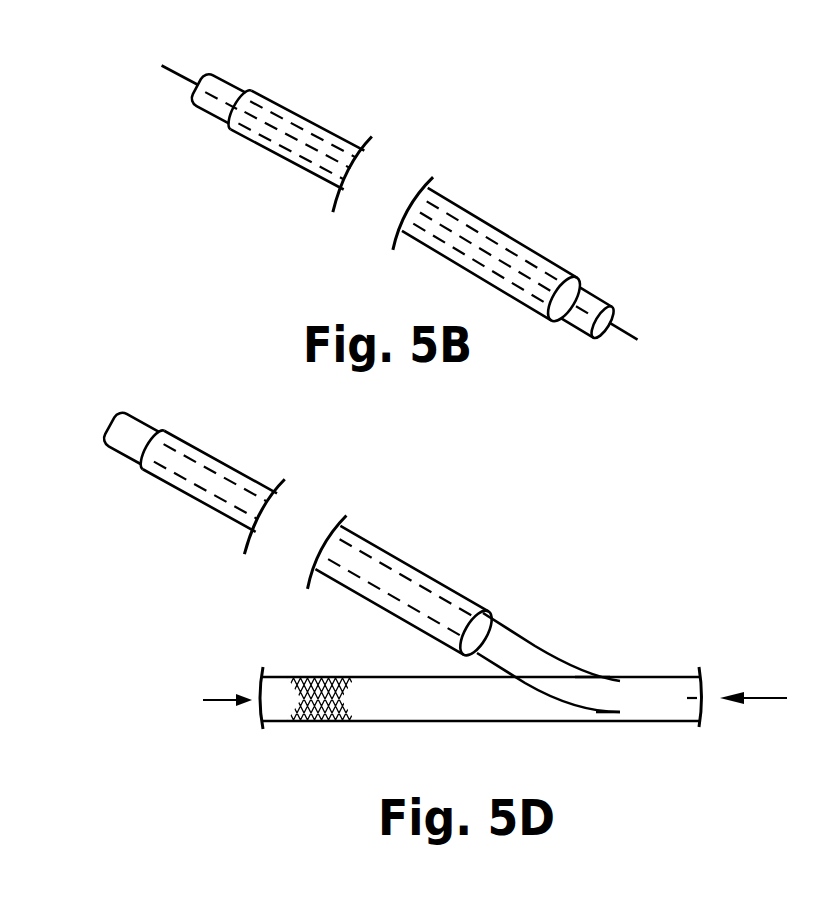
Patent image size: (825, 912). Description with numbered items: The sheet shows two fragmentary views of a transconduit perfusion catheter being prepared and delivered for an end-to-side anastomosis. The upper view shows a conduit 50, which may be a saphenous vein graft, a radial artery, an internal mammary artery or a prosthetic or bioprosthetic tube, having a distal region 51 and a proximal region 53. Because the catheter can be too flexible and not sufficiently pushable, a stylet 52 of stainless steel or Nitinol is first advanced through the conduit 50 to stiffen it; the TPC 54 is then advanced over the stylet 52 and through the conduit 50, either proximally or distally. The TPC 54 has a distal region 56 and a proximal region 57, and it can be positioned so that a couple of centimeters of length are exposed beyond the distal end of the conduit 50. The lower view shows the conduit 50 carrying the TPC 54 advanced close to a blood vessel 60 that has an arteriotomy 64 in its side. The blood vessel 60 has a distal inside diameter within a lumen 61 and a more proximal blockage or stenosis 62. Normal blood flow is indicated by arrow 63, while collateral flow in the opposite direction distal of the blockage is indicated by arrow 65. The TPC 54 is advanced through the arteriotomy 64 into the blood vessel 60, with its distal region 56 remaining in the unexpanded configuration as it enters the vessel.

In FIG. 5B, the conduit 50 is at (478, 212).
In FIG. 5D, the conduit 50 is at (388, 552).
In FIG. 5D, the distal region 51 is at (463, 595).
In FIG. 5B, the stylet 52 is at (182, 73).
In FIG. 5D, the proximal region 53 is at (173, 432).
In FIG. 5B, the transconduit perfusion catheter 54 is at (323, 133).
In FIG. 5D, the transconduit perfusion catheter 54 is at (513, 638).
In FIG. 5B, the distal region 56 is at (587, 337).
In FIG. 5D, the distal region 56 is at (606, 712).
In FIG. 5B, the proximal region 57 is at (237, 85).
In FIG. 5D, the blood vessel 60 is at (670, 673).
In FIG. 5D, the lumen 61 is at (705, 702).
In FIG. 5D, the stenosis 62 is at (317, 725).
In FIG. 5D, the arrow 63 is at (225, 702).
In FIG. 5D, the arteriotomy 64 is at (592, 670).
In FIG. 5D, the arrow 65 is at (768, 697).